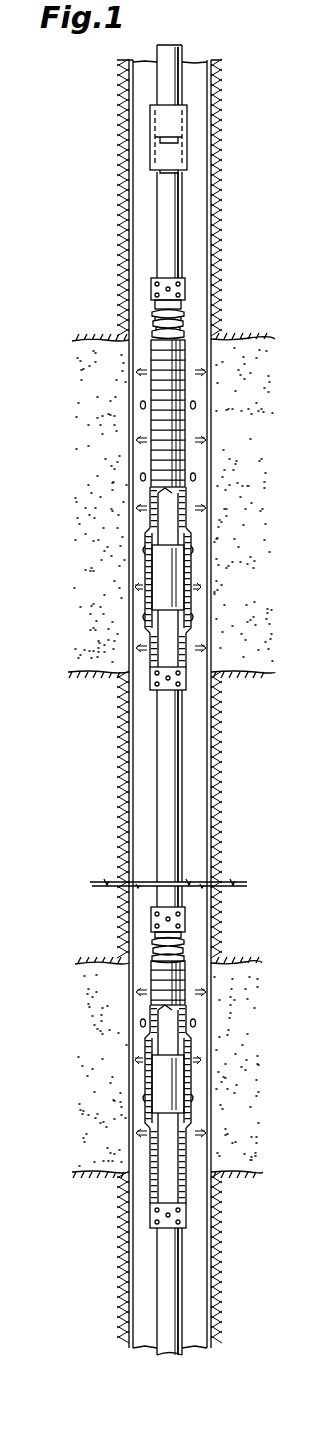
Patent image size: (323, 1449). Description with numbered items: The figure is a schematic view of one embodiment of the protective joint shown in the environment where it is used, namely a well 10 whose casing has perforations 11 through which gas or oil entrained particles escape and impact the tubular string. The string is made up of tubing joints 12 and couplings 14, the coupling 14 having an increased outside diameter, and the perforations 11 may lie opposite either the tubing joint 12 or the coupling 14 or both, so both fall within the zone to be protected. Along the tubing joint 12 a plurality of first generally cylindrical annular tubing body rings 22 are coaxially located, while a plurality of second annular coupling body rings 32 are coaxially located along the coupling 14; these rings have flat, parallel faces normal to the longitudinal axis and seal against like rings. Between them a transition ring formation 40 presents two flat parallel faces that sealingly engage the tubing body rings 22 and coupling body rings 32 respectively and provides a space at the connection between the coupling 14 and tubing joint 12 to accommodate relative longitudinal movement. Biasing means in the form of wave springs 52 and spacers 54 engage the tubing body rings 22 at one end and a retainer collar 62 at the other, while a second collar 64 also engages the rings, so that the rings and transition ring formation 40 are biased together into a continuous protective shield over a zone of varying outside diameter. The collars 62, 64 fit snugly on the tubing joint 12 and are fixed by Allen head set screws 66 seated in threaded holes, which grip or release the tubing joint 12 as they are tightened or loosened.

The well 10 is at (195, 62).
The perforations 11 is at (197, 405).
The tubing joint 12 is at (175, 512).
The coupling 14 is at (170, 583).
The tubing body rings 22 is at (152, 415).
The coupling body rings 32 is at (150, 567).
The transition ring formation 40 is at (143, 527).
The wave springs 52 is at (153, 304).
The spacers 54 is at (185, 318).
The collar 62 is at (185, 295).
The collar 64 is at (190, 683).
The Allen head set screws 66 is at (188, 284).